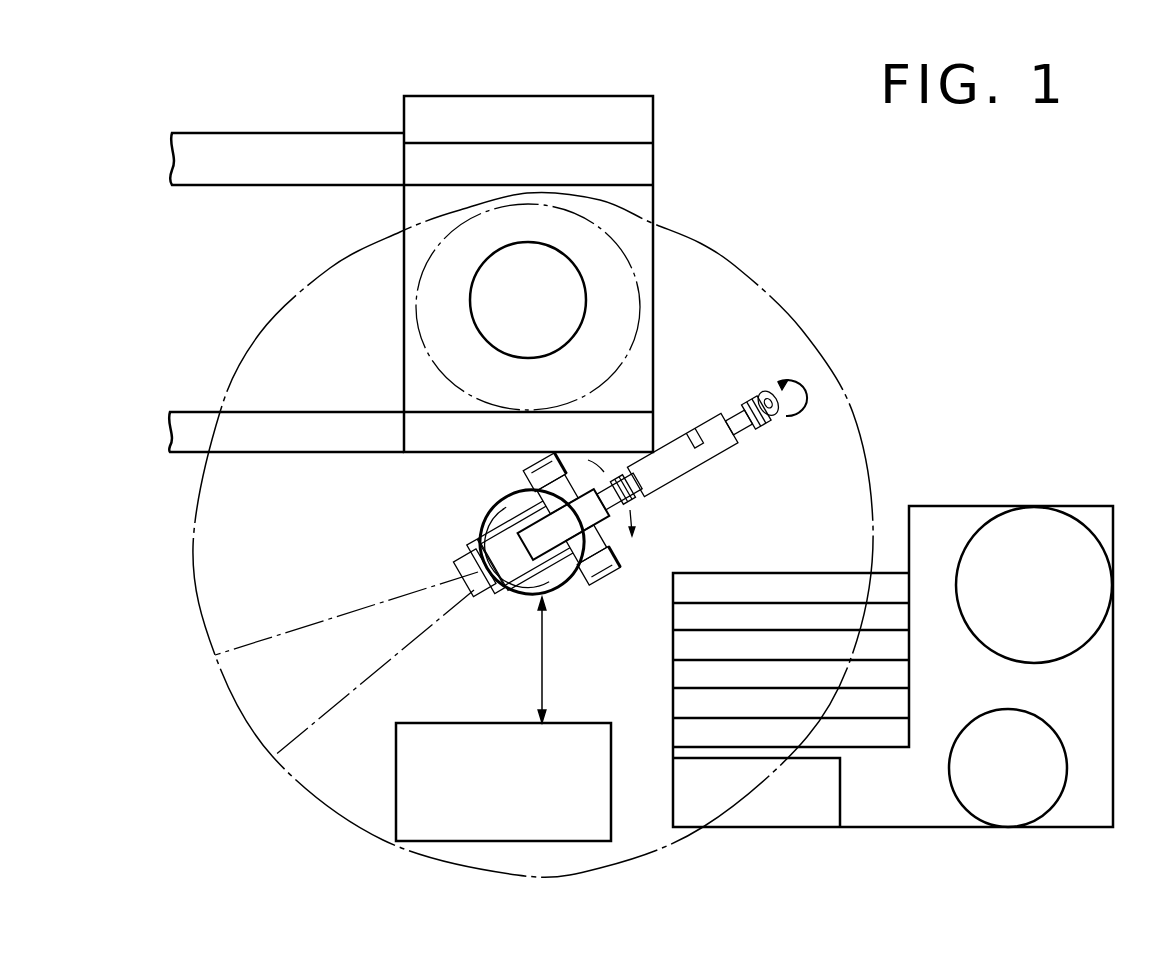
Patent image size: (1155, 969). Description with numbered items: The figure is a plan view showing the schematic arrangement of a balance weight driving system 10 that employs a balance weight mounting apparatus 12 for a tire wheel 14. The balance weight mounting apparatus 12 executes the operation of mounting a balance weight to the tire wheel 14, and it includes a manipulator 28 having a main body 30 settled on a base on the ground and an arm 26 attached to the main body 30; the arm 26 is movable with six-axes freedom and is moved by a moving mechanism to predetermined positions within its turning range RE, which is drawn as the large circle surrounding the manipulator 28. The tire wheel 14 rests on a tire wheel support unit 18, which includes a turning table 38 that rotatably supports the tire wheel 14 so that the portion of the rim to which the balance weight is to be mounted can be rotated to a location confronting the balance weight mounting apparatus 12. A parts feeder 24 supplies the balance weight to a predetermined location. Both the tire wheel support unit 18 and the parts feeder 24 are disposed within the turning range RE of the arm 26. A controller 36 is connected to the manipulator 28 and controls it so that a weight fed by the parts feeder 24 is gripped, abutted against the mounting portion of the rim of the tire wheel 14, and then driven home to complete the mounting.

The balance weight driving system 10 is at (867, 289).
The balance weight mounting apparatus 12 is at (763, 357).
The tire wheel 14 is at (440, 373).
The tire wheel support unit 18 is at (653, 138).
The parts feeder 24 is at (978, 506).
The arm 26 is at (707, 470).
The manipulator 28 is at (570, 583).
The main body 30 is at (507, 597).
The controller 36 is at (598, 723).
The turning table 38 is at (572, 317).
The turning range RE is at (853, 413).